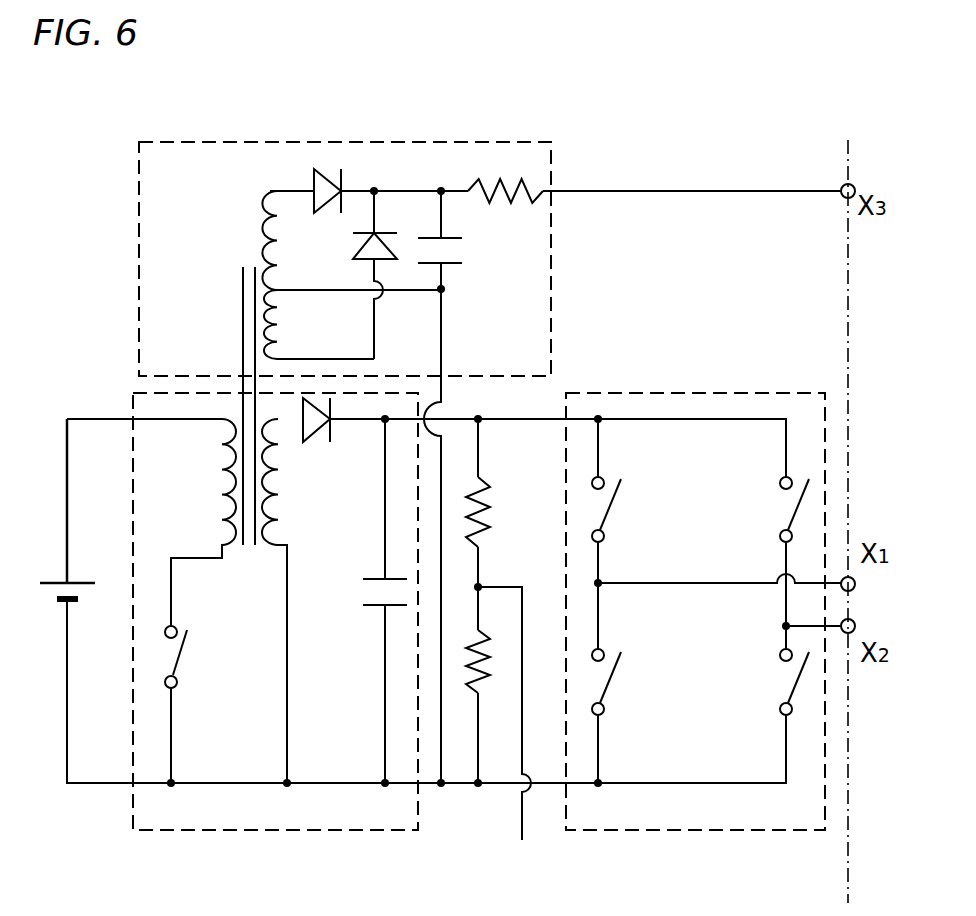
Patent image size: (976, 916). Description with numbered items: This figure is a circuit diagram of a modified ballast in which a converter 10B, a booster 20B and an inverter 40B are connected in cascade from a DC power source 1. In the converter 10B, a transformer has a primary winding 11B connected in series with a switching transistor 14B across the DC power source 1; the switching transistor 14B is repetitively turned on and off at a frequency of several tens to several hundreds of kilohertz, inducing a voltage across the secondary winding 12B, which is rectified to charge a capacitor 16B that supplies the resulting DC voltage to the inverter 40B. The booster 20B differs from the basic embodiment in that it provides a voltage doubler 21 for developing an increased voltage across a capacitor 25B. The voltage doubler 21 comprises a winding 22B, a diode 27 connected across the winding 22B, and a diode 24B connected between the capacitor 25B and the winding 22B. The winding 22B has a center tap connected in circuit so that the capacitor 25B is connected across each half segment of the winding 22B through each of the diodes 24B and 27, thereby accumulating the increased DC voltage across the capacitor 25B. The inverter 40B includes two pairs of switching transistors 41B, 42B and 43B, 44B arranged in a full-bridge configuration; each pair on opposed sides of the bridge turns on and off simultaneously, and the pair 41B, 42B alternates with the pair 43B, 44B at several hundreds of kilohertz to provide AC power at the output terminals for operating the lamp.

The DC power source 1 is at (50, 592).
The converter 10B is at (128, 821).
The primary winding 11B is at (217, 459).
The secondary winding 12B is at (285, 472).
The switching transistor 14B is at (192, 653).
The capacitor 16B is at (363, 588).
The booster 20B is at (133, 179).
The voltage doubler 21 is at (243, 221).
The winding 22B is at (257, 242).
The diode 24B is at (330, 163).
The capacitor 25B is at (468, 250).
The diode 27 is at (403, 240).
The inverter 40B is at (697, 380).
The switching transistor 41B is at (623, 503).
The switching transistor 42B is at (768, 680).
The switching transistor 43B is at (768, 498).
The switching transistor 44B is at (623, 673).